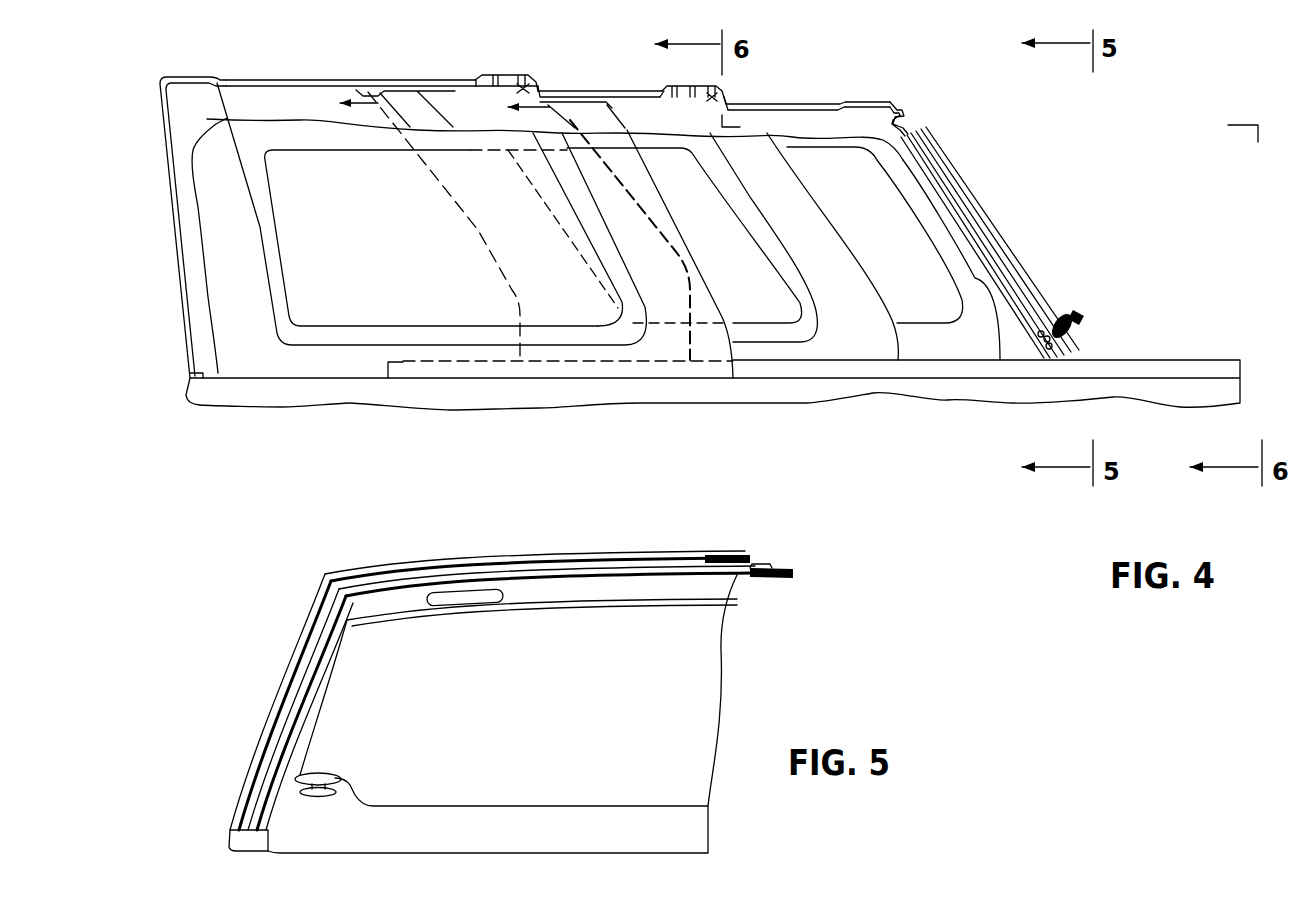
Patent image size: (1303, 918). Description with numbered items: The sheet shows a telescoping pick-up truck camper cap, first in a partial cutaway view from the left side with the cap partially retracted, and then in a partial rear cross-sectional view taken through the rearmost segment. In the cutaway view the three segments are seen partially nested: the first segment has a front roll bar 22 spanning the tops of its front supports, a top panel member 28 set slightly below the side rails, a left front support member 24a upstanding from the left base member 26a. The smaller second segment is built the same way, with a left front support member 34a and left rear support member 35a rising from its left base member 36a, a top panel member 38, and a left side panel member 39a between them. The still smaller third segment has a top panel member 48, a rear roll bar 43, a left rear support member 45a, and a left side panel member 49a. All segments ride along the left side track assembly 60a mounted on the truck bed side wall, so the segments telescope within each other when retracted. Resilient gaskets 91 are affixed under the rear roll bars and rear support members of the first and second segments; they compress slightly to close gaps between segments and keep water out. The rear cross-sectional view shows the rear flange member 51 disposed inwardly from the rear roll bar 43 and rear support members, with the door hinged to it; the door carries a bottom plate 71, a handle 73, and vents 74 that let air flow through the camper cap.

In FIG. 4, the front roll bar 22 is at (193, 74).
In FIG. 4, the top panel member 28 is at (313, 80).
In FIG. 4, the gasket 91 is at (535, 82).
In FIG. 5, the gasket 91 is at (747, 557).
In FIG. 4, the top panel member 38 is at (590, 91).
In FIG. 4, the top panel member 48 is at (808, 103).
In FIG. 4, the rear roll bar 43 is at (873, 93).
In FIG. 4, the left rear support member 45a is at (977, 280).
In FIG. 4, the left front support member 24a is at (215, 212).
In FIG. 4, the left front support member 34a is at (470, 177).
In FIG. 4, the left side panel member 39a is at (690, 220).
In FIG. 4, the left base member 36a is at (813, 350).
In FIG. 4, the left rear support member 35a is at (847, 272).
In FIG. 4, the left side panel member 49a is at (850, 210).
In FIG. 4, the left side track assembly 60a is at (1170, 367).
In FIG. 4, the left base member 26a is at (417, 353).
In FIG. 5, the rear flange member 51 is at (292, 735).
In FIG. 5, the bottom plate 71 is at (688, 830).
In FIG. 5, the vents 74 is at (500, 598).
In FIG. 5, the handle 73 is at (325, 777).